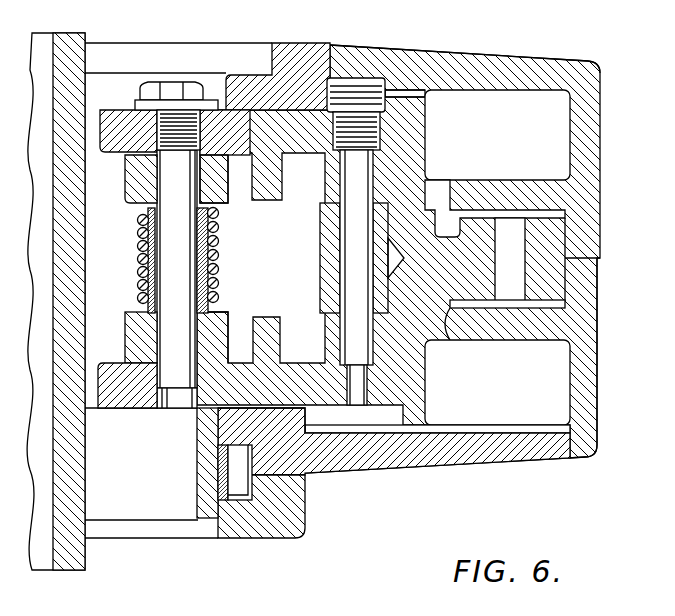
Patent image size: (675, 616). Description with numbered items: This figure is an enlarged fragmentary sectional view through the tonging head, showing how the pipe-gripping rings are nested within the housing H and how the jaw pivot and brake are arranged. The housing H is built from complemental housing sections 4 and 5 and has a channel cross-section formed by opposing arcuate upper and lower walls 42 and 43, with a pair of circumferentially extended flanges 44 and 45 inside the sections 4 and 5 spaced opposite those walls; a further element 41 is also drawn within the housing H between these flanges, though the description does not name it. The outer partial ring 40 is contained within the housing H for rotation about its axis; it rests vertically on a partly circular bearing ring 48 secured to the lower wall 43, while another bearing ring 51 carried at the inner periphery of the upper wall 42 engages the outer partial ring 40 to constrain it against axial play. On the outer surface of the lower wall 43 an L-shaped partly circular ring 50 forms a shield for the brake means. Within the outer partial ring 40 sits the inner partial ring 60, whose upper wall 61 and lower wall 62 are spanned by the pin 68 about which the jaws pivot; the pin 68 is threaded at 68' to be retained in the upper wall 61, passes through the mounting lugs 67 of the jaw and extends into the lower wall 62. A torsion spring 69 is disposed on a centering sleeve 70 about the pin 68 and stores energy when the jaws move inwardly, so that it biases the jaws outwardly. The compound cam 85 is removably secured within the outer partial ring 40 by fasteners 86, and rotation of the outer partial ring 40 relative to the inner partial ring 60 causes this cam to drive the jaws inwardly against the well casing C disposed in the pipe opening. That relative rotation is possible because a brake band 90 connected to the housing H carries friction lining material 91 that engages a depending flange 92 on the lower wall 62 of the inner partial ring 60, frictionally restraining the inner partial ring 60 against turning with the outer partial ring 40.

The well casing C is at (70, 557).
The housing H is at (606, 131).
The housing section 4 is at (598, 100).
The housing section 5 is at (590, 372).
The outer partial ring 40 is at (428, 381).
The piston 41 is at (513, 235).
The upper wall 42 is at (415, 53).
The lower wall 43 is at (457, 450).
The circumferentially extended flange 44 is at (487, 183).
The circumferentially extended flange 45 is at (515, 328).
The bearing ring 48 is at (297, 417).
The L-shaped partly circular ring 50 is at (267, 530).
The bearing ring 51 is at (297, 95).
The inner partial ring 60 is at (110, 103).
The upper wall 61 is at (125, 113).
The lower wall 62 is at (137, 400).
The mounting lugs 67 is at (222, 195).
The pin 68 is at (123, 259).
The threaded portion 68' is at (204, 78).
The torsion spring 69 is at (217, 238).
The centering sleeve 70 is at (147, 290).
The compound cam 85 is at (321, 297).
The fastener 86 is at (357, 185).
The brake band 90 is at (229, 500).
The friction lining material 91 is at (220, 500).
The depending flange 92 is at (203, 497).